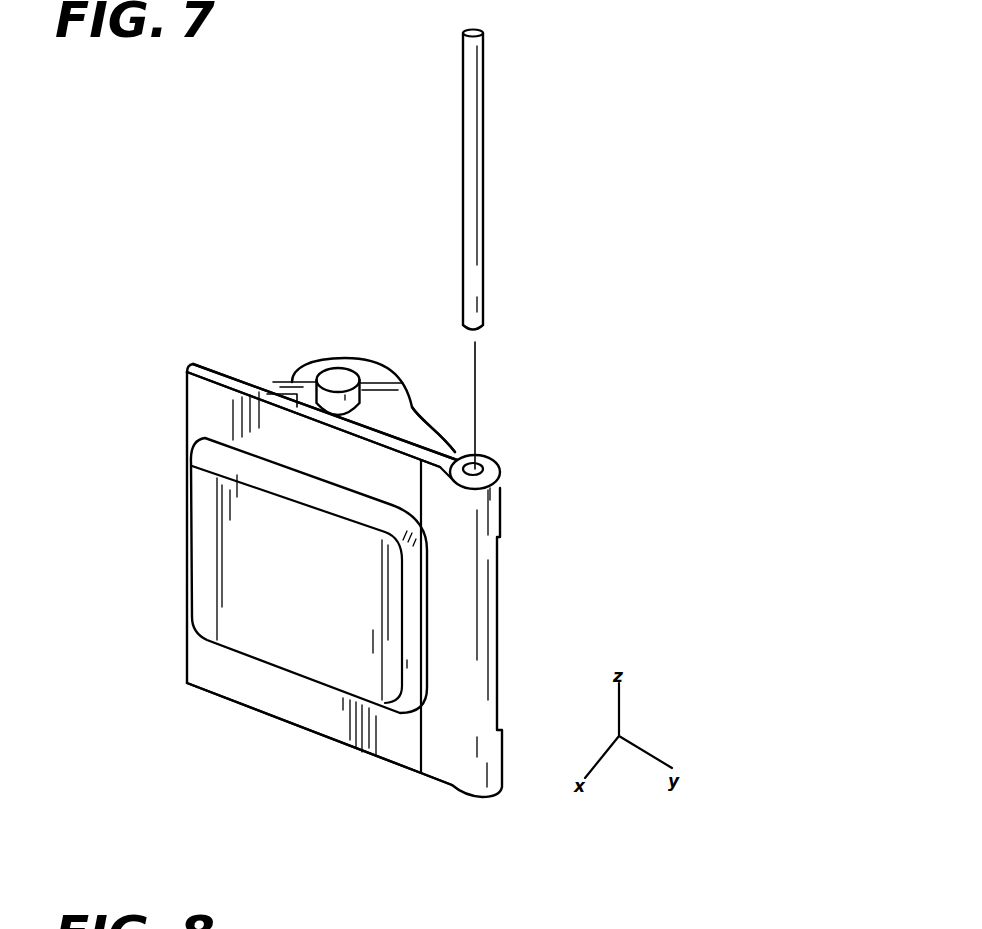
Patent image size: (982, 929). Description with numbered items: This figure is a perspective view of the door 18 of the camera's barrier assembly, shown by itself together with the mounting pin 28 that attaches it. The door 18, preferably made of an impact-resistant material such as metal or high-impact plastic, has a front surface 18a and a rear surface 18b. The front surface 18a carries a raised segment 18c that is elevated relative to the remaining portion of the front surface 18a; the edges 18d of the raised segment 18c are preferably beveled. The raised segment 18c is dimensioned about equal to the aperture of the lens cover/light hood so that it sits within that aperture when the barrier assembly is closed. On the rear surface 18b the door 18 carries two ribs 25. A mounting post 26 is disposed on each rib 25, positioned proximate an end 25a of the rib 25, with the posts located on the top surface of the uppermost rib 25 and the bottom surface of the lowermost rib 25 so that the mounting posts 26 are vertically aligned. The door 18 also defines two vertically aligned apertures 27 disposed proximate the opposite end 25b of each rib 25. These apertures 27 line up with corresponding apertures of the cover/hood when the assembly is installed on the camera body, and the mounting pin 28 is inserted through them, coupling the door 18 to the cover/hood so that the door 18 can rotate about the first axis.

The door 18 is at (165, 375).
The front surface 18a is at (228, 684).
The rear surface 18b is at (213, 363).
The raised segment 18c is at (283, 561).
The edges 18d is at (415, 598).
The ribs 25 is at (375, 370).
The end of rib 25a is at (293, 362).
The end of rib 25b is at (466, 452).
The mounting post 26 is at (340, 372).
The apertures 27 is at (500, 457).
The mounting pin 28 is at (475, 80).